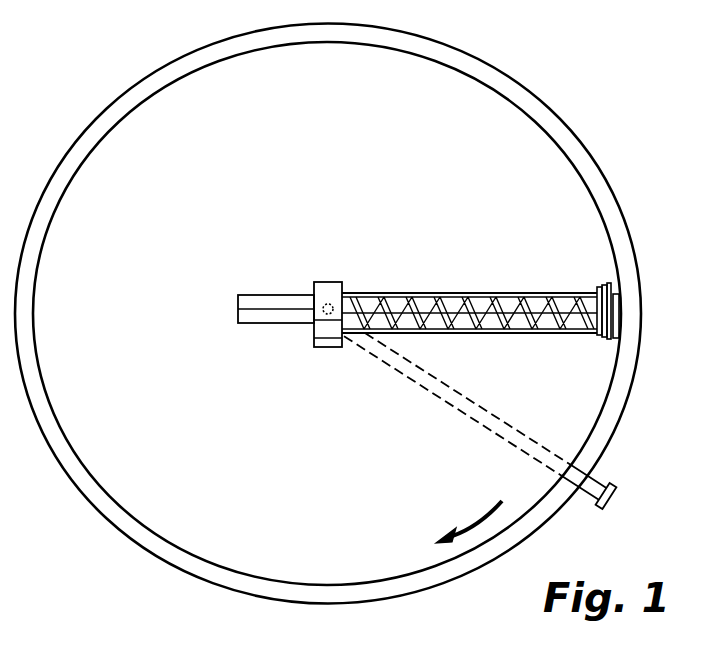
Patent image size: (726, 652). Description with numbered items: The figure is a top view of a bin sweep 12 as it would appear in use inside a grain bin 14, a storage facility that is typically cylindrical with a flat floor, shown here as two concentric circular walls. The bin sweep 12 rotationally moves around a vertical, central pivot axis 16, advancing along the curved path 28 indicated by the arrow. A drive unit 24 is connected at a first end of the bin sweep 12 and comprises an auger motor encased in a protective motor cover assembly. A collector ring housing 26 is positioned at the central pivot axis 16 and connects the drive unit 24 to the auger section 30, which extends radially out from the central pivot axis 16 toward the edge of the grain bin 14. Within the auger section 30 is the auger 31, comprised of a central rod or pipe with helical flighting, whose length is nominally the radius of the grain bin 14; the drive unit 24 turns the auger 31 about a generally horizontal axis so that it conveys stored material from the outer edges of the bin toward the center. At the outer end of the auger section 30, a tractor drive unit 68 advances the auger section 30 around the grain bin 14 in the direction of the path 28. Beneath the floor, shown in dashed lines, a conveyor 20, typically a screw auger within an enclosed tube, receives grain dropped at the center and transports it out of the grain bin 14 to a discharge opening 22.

The bin sweep 12 is at (443, 288).
The grain bin 14 is at (572, 136).
The central pivot axis 16 is at (318, 315).
The conveyor 20 is at (522, 433).
The discharge opening 22 is at (615, 501).
The drive unit 24 is at (266, 297).
The collector ring housing 26 is at (328, 291).
The path 28 is at (482, 520).
The auger section 30 is at (507, 291).
The auger 31 is at (560, 314).
The tractor drive unit 68 is at (620, 311).